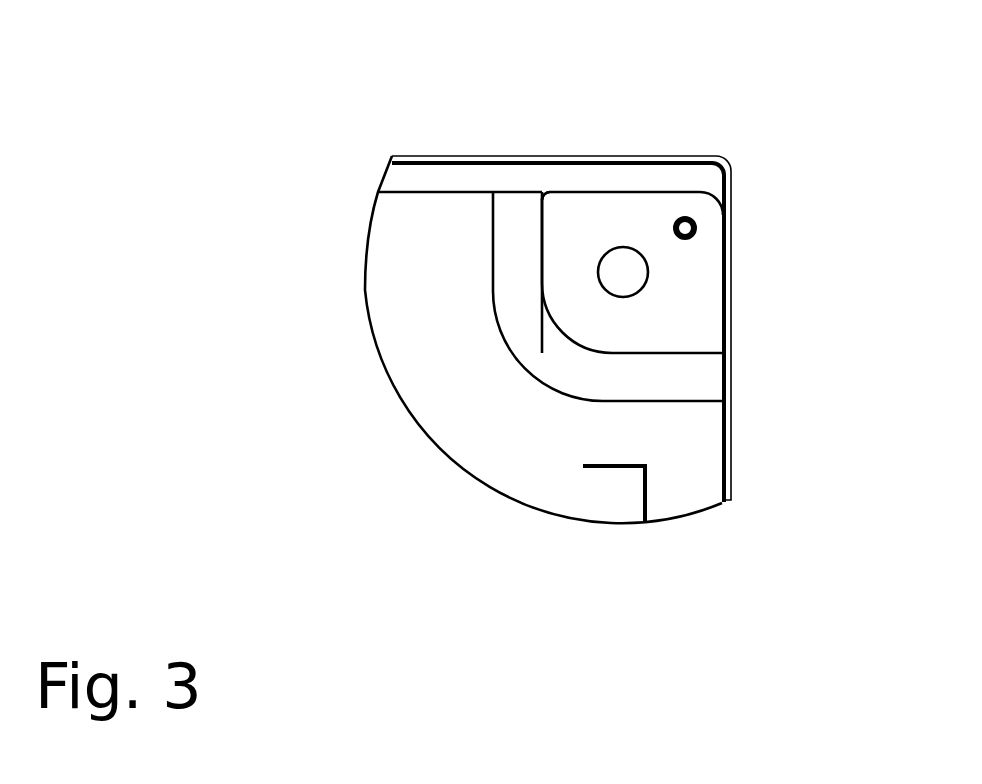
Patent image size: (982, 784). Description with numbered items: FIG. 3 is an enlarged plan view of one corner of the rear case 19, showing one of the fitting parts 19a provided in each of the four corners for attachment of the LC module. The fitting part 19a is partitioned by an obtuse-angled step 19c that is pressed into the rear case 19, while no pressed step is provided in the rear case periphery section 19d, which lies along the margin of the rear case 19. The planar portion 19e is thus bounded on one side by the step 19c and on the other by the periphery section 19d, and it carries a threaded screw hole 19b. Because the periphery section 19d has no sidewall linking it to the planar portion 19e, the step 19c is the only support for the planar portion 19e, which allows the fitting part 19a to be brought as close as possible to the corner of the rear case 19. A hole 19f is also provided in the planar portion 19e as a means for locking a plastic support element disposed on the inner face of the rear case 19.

The rear case 19 is at (460, 395).
The fitting part 19a is at (735, 175).
The threaded screw hole 19b is at (623, 272).
The obtuse-angled step 19c is at (652, 377).
The rear case periphery section 19d is at (637, 192).
The planar portion 19e is at (573, 218).
The hole 19f is at (697, 230).